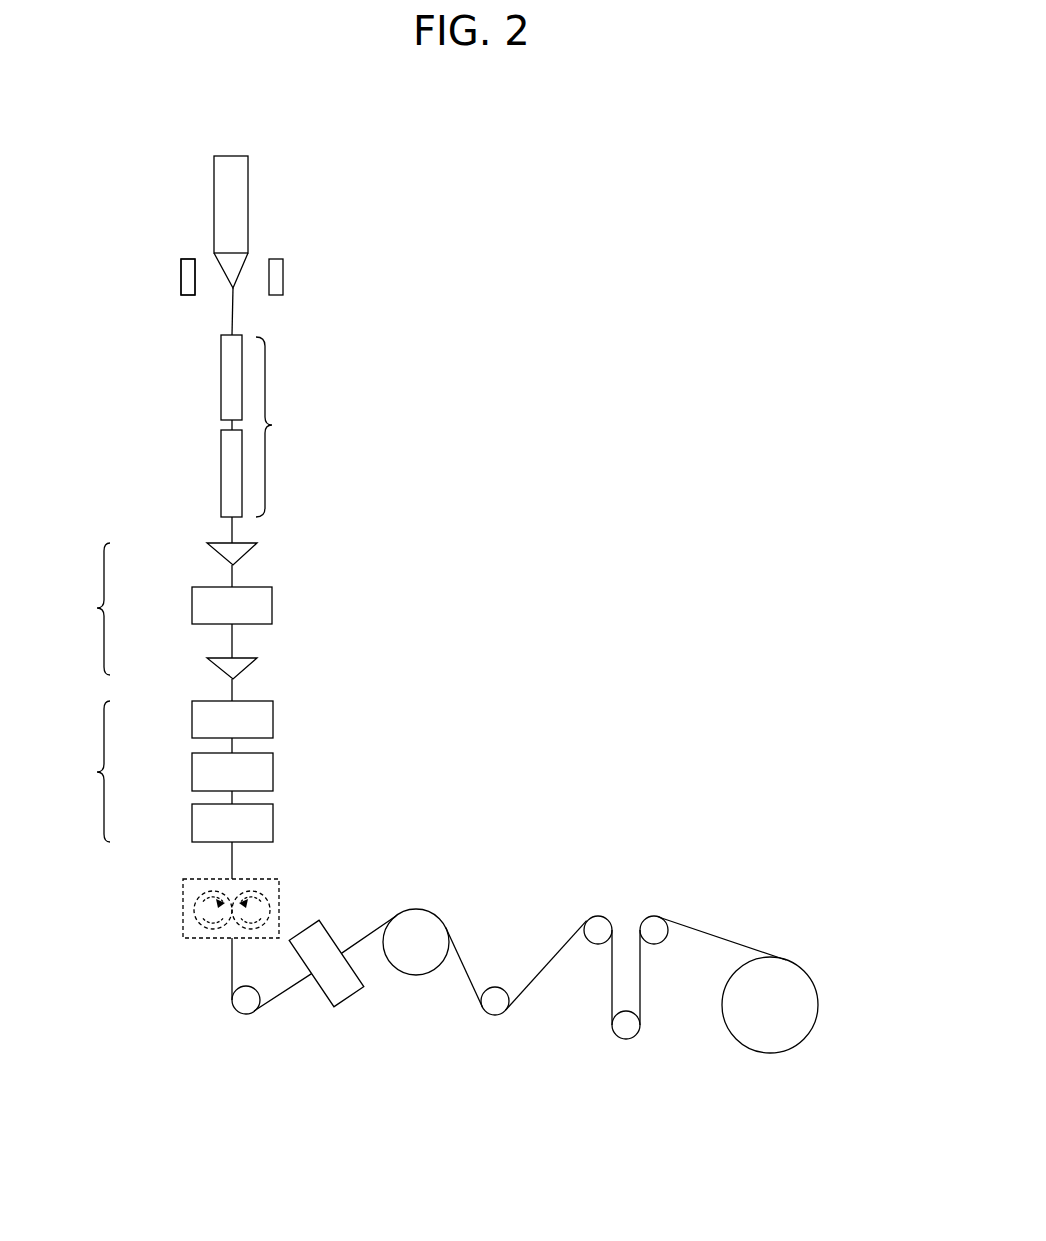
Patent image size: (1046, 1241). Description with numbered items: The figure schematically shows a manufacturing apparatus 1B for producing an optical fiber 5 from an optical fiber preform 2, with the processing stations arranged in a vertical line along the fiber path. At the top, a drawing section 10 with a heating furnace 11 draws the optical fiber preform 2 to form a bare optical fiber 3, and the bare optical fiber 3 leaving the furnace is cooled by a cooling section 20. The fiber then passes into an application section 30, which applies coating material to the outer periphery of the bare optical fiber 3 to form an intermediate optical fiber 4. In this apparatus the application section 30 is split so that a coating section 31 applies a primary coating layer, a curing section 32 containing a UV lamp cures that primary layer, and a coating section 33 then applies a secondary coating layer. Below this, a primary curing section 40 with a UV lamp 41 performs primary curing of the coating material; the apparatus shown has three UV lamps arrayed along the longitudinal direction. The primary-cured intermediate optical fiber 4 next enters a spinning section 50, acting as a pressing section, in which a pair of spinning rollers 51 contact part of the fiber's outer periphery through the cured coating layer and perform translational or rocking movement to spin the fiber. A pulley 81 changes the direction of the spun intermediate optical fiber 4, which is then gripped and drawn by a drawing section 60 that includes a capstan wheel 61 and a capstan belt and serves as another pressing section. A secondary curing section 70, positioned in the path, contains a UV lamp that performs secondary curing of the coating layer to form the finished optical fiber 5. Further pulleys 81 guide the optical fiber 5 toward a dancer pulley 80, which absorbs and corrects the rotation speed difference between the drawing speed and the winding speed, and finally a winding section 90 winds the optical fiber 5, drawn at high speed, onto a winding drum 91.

The manufacturing apparatus 1B is at (533, 187).
The optical fiber preform 2 is at (237, 200).
The bare optical fiber 3 is at (232, 309).
The drawing section 10 is at (157, 273).
The heating furnace 11 is at (186, 283).
The cooling section 20 is at (266, 439).
The application section 30 is at (165, 611).
The coating section for applying a primary coating layer 31 is at (230, 555).
The curing section for a primary coating layer 32 is at (205, 603).
The coating section for applying a secondary coating layer 33 is at (228, 668).
The intermediate optical fiber 4 is at (314, 882).
The primary curing section 40 is at (165, 771).
The UV lamp 41 is at (200, 718).
The spinning section 50 is at (236, 903).
The spinning rollers 51 is at (262, 910).
The drawing section 60 is at (455, 947).
The capstan wheel 61 is at (416, 955).
The secondary curing section 70 is at (343, 990).
The optical fiber 5 is at (565, 945).
The dancer pulley 80 is at (627, 1027).
The pulley 81 is at (240, 1003).
The winding section 90 is at (778, 991).
The winding drum 91 is at (750, 1030).